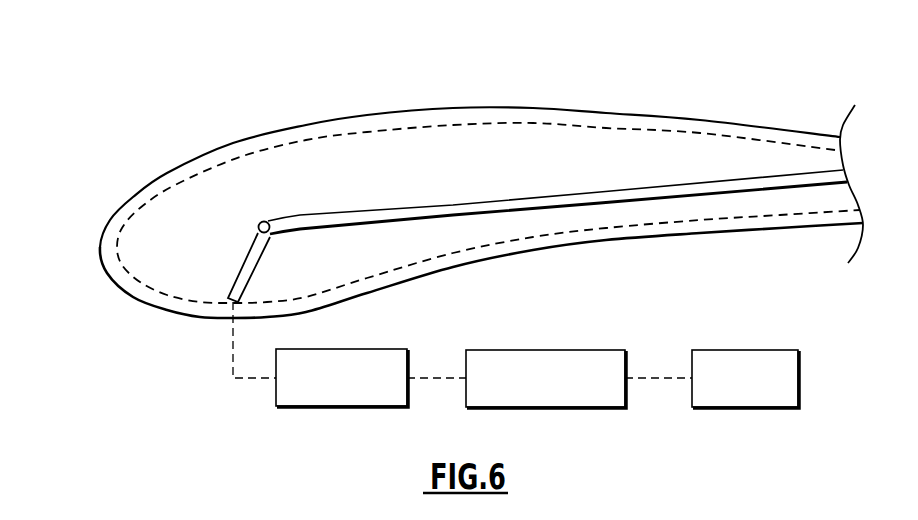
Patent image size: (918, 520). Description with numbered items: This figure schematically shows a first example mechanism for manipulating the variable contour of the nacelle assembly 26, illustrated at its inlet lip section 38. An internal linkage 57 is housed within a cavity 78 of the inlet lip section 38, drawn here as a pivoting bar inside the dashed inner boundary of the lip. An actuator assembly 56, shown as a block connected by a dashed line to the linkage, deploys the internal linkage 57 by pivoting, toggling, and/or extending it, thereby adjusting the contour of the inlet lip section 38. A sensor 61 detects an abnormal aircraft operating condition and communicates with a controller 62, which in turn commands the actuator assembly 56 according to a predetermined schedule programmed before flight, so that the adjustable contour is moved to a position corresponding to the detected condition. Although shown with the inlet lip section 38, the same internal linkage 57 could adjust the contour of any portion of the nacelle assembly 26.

The nacelle assembly 26 is at (445, 185).
The inlet lip section 38 is at (90, 222).
The cavity 78 is at (317, 163).
The internal linkage 57 is at (302, 217).
The actuator assembly 56 is at (338, 407).
The controller 62 is at (560, 407).
The sensor 61 is at (763, 407).